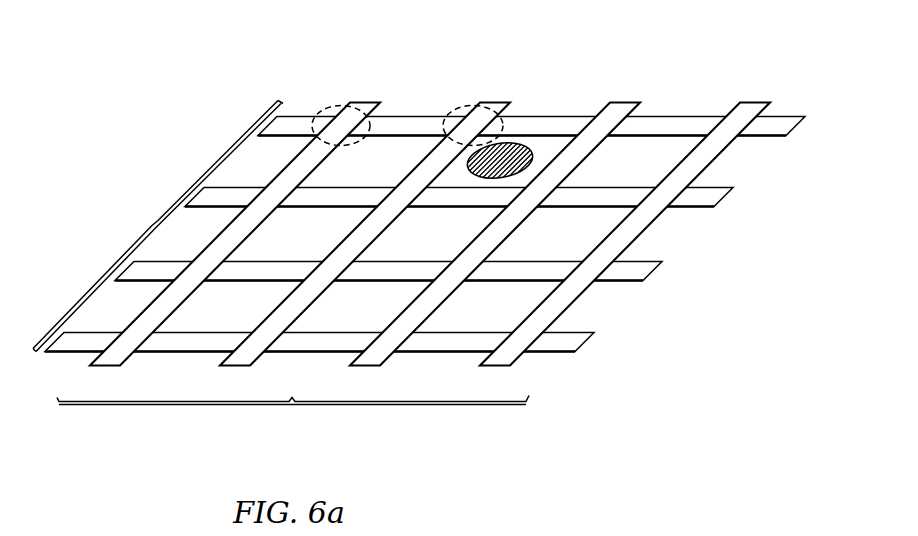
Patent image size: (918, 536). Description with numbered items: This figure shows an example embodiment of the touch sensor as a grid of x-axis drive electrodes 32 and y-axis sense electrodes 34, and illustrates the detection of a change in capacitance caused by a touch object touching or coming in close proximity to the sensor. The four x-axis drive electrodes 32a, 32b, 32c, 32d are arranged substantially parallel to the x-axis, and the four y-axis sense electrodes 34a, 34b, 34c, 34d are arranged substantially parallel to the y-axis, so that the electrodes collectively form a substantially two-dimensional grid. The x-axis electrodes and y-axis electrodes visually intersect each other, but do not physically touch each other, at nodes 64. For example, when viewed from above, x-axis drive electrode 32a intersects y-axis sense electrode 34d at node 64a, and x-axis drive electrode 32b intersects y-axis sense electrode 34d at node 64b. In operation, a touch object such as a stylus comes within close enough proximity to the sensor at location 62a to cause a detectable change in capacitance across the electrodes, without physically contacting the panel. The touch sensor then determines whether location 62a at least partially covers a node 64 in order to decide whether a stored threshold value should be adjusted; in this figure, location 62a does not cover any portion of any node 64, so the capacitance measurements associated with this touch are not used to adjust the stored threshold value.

The x-axis drive electrodes 32 is at (409, 292).
The x-axis drive electrode 32a is at (108, 358).
The x-axis drive electrode 32b is at (238, 358).
The x-axis drive electrode 32c is at (370, 358).
The x-axis drive electrode 32d is at (500, 358).
The y-axis sense electrodes 34 is at (420, 212).
The y-axis sense electrode 34a is at (585, 333).
The y-axis sense electrode 34b is at (656, 262).
The y-axis sense electrode 34c is at (726, 189).
The y-axis sense electrode 34d is at (787, 124).
The touch location 62a is at (533, 144).
The nodes 64 is at (403, 77).
The node 64a is at (313, 128).
The node 64b is at (490, 106).